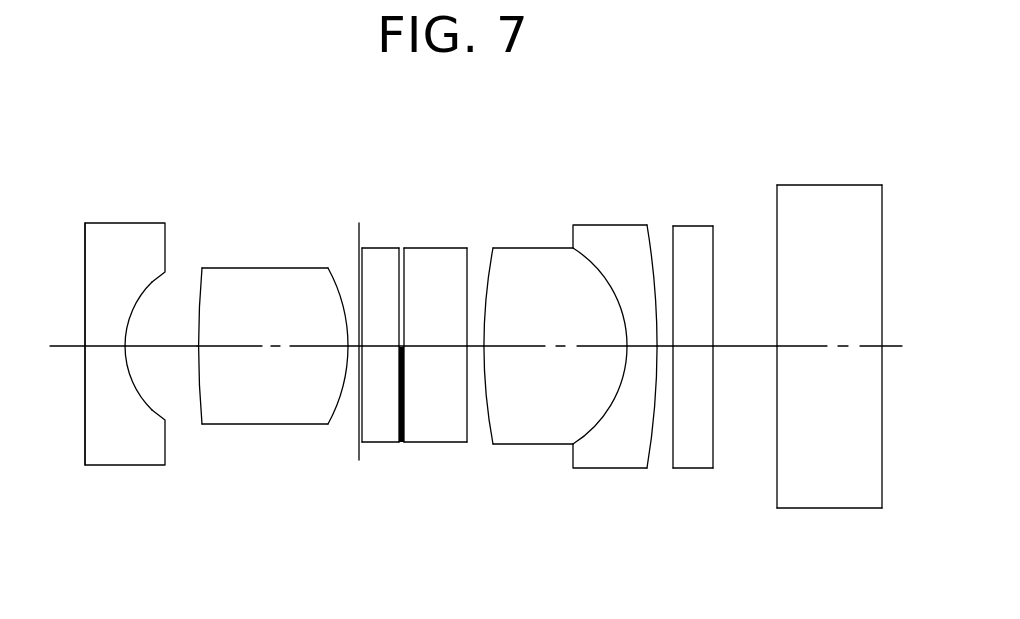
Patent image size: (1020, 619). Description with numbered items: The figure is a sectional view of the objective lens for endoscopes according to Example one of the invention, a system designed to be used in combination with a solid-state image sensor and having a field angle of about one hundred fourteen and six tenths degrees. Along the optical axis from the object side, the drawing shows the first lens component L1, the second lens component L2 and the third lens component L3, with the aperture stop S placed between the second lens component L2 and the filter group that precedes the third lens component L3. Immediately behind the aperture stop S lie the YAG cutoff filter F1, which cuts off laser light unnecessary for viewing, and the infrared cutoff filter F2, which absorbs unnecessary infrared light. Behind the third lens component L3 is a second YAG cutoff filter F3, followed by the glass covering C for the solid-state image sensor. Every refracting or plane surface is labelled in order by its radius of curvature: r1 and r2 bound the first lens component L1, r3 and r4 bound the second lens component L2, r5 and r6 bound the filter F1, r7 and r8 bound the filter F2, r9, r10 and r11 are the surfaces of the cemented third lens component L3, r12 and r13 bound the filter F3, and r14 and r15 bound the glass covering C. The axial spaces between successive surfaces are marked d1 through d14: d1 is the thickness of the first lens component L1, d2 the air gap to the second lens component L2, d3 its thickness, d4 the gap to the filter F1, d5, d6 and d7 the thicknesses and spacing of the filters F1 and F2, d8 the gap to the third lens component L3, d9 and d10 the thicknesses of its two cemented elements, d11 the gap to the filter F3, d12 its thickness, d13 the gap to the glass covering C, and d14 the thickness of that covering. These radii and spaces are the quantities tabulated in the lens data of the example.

The first lens component L1 is at (107, 286).
The second lens component L2 is at (267, 265).
The third lens component L3 is at (570, 287).
The aperture stop S is at (358, 462).
The YAG cutoff filter F1 is at (374, 367).
The infrared cutoff filter F2 is at (439, 367).
The YAG cutoff filter F3 is at (692, 367).
The glass covering C is at (824, 359).
The radius of curvature of lens surface r1 is at (85, 233).
The radius of curvature of lens surface r2 is at (151, 284).
The radius of curvature of lens surface r3 is at (199, 294).
The radius of curvature of lens surface r4 is at (338, 270).
The radius of curvature of lens surface r5 is at (360, 274).
The radius of curvature of lens surface r6 is at (399, 269).
The radius of curvature of lens surface r7 is at (405, 269).
The radius of curvature of lens surface r8 is at (467, 269).
The radius of curvature of lens surface r9 is at (492, 264).
The radius of curvature of lens surface r10 is at (575, 253).
The radius of curvature of lens surface r11 is at (647, 258).
The radius of curvature of lens surface r12 is at (673, 240).
The radius of curvature of lens surface r13 is at (713, 240).
The radius of curvature of lens surface r14 is at (777, 212).
The radius of curvature of lens surface r15 is at (882, 212).
The space between lens surfaces d1 is at (87, 369).
The space between lens surfaces d2 is at (161, 369).
The space between lens surfaces d3 is at (272, 369).
The space between lens surfaces d4 is at (352, 392).
The space between lens surfaces d5 is at (380, 369).
The space between lens surfaces d6 is at (401, 443).
The space between lens surfaces d7 is at (435, 369).
The space between lens surfaces d8 is at (482, 396).
The space between lens surfaces d9 is at (555, 369).
The space between lens surfaces d10 is at (642, 374).
The space between lens surfaces d11 is at (664, 358).
The space between lens surfaces d12 is at (695, 373).
The space between lens surfaces d13 is at (745, 373).
The space between lens surfaces d14 is at (839, 373).